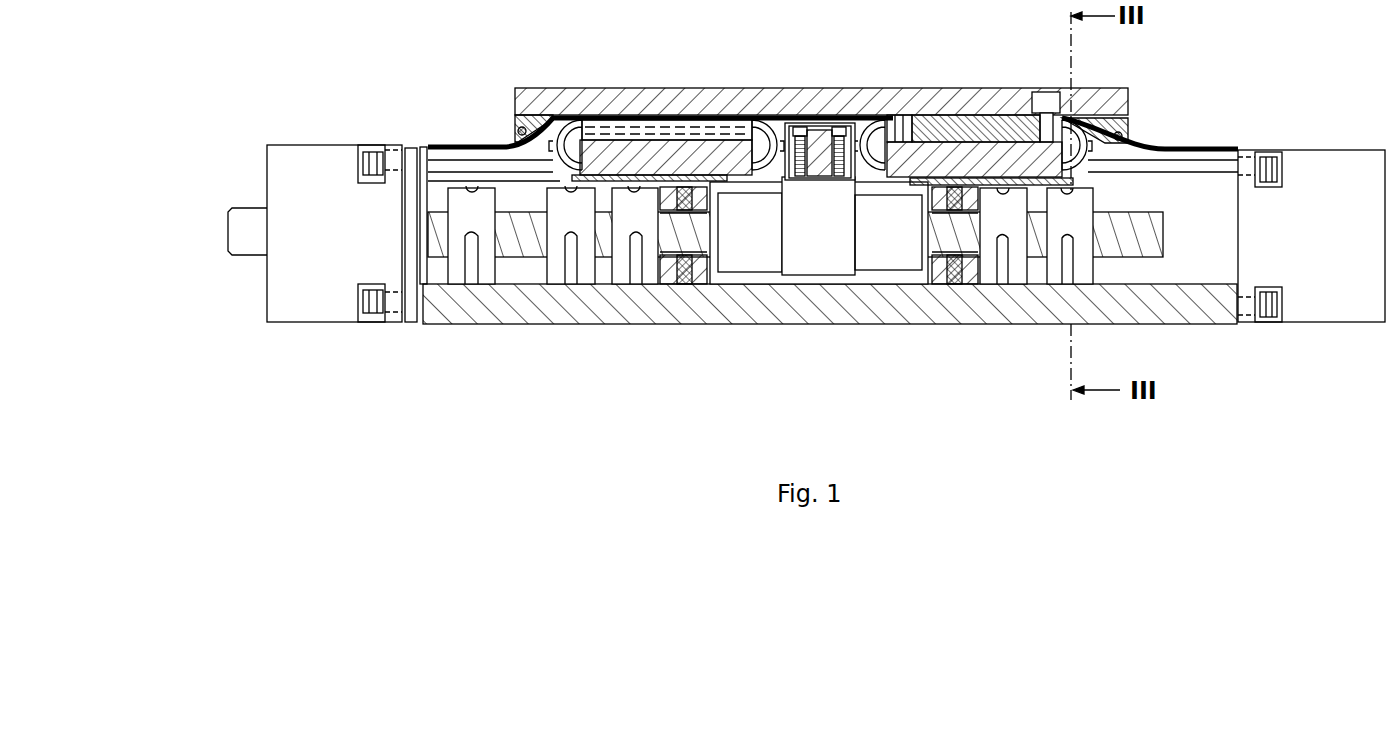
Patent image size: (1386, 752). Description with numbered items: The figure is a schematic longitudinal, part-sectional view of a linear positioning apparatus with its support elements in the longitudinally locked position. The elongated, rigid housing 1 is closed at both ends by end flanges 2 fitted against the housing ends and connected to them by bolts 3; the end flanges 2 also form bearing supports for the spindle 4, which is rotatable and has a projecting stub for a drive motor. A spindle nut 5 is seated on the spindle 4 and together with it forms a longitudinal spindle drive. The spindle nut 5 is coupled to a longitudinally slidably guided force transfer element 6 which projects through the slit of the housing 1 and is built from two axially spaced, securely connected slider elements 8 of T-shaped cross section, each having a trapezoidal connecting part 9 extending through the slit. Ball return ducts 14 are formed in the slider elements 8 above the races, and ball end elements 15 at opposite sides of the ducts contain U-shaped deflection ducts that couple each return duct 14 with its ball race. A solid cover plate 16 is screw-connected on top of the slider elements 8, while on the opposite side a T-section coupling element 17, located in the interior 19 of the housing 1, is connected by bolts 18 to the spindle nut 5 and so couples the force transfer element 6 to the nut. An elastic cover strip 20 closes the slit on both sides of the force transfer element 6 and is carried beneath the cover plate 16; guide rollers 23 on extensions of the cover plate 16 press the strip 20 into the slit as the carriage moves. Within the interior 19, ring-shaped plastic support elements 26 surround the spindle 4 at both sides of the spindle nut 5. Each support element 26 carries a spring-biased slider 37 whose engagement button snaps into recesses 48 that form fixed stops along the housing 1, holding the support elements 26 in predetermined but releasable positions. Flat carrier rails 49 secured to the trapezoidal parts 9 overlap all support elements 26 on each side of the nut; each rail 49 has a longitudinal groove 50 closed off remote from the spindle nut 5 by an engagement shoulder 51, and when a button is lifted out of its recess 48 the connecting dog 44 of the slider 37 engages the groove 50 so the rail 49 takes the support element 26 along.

The housing 1 is at (800, 324).
The end flange 2 is at (322, 155).
The bolt 3 is at (372, 152).
The spindle 4 is at (518, 325).
The spindle nut 5 is at (748, 258).
The force transfer element 6 is at (782, 118).
The slider element 8 is at (973, 127).
The connecting part 9 is at (705, 157).
The ball return duct 14 is at (833, 74).
The ball end element 15 is at (550, 118).
The cover plate 16 is at (597, 98).
The coupling element 17 is at (803, 262).
The bolt 18 is at (810, 125).
The interior 19 is at (1213, 268).
The cover strip 20 is at (473, 146).
The guide roller 23 is at (513, 128).
The support element 26 is at (455, 272).
The slider 37 is at (625, 275).
The connecting dog 44 is at (960, 125).
The recess 48 is at (472, 285).
The carrier rail 49 is at (732, 183).
The groove 50 is at (632, 188).
The engagement shoulder 51 is at (570, 181).